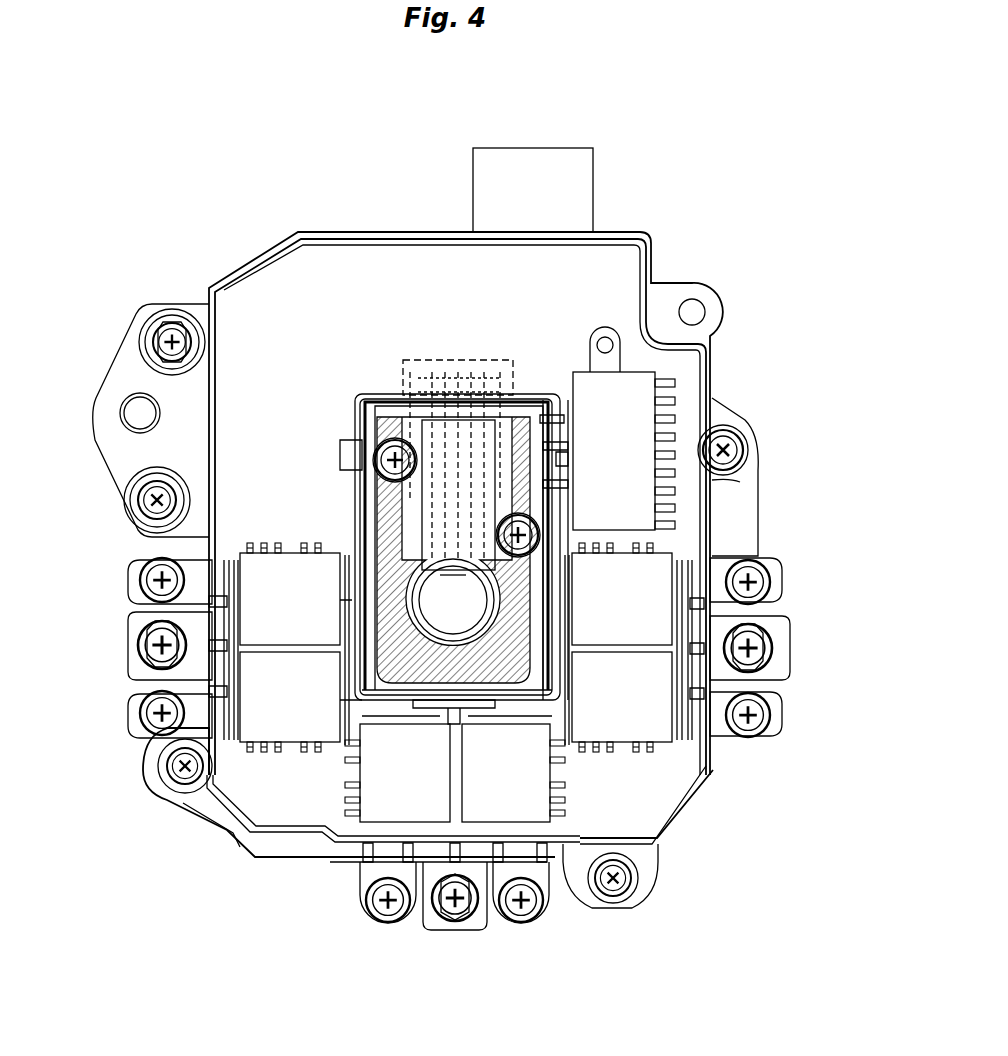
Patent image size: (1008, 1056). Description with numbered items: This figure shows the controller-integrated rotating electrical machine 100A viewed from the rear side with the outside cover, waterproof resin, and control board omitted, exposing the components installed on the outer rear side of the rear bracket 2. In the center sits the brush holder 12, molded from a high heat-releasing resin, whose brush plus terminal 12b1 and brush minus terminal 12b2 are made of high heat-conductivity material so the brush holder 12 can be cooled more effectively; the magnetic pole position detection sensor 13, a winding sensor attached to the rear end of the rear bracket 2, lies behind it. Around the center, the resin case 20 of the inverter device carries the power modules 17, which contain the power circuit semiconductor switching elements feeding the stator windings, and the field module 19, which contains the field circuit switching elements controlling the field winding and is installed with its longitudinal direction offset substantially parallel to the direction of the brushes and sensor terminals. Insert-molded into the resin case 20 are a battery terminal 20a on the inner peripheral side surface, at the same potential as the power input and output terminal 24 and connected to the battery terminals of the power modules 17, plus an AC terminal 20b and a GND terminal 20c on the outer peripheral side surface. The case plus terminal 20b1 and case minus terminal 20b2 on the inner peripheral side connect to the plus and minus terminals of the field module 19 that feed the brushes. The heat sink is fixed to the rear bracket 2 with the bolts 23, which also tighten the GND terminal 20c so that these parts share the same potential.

The rear bracket 2 is at (742, 530).
The brush holder 12 is at (428, 530).
The brush plus terminal 12b1 is at (413, 420).
The brush minus terminal 12b2 is at (512, 548).
The magnetic pole position detection sensor 13 is at (493, 648).
The power modules 17 is at (267, 570).
The field module 19 is at (607, 422).
The resin case 20 is at (257, 262).
The battery terminal 20a is at (403, 720).
The AC terminal 20b is at (388, 843).
The case plus terminal 20b1 is at (553, 437).
The case minus terminal 20b2 is at (547, 447).
The GND terminal 20c is at (437, 842).
The bolts 23 is at (155, 655).
The power input and output terminal 24 is at (138, 411).
The controller-integrated rotating electrical machine 100A is at (720, 1014).